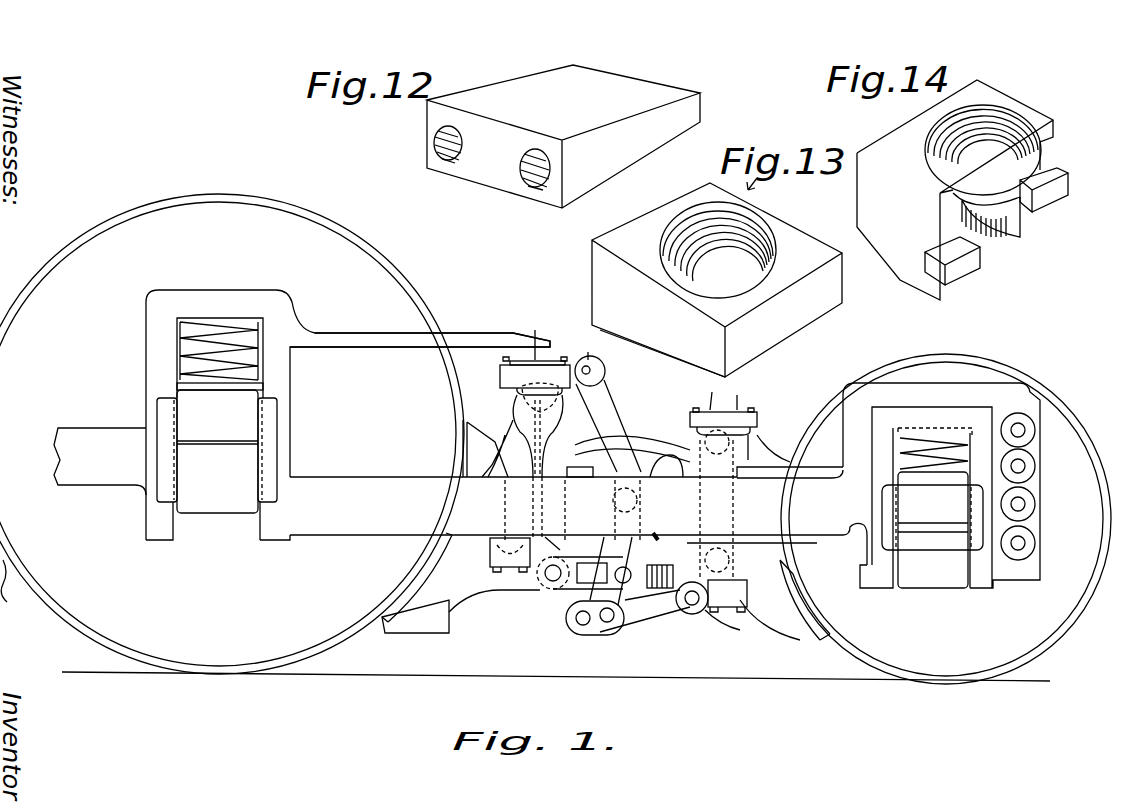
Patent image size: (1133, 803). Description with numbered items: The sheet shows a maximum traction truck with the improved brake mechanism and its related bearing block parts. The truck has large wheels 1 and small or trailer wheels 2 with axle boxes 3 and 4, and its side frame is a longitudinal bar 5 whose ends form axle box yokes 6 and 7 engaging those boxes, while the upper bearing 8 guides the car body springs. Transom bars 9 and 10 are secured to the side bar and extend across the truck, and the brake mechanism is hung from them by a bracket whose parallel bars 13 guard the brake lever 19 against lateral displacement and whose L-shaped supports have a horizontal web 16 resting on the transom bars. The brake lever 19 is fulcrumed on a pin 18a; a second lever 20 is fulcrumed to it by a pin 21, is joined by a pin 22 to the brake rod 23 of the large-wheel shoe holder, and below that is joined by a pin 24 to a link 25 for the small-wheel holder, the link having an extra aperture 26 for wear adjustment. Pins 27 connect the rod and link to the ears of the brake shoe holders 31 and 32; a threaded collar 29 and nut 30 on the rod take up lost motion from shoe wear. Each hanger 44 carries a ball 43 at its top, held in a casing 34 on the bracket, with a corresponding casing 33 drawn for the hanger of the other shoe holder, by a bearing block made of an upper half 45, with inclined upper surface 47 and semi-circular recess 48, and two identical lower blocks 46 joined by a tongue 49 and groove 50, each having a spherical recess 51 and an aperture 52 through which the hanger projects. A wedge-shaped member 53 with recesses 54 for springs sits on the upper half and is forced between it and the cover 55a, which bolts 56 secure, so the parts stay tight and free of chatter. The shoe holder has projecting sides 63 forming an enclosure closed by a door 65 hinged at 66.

In FIG. 1, the large wheels 1 is at (232, 434).
In FIG. 1, the small or trailer wheels 2 is at (946, 519).
In FIG. 1, the axle box 3 is at (165, 417).
In FIG. 1, the axle box 4 is at (932, 508).
In FIG. 1, the longitudinal bar 5 is at (578, 516).
In FIG. 1, the axle box yoke 6 is at (221, 299).
In FIG. 1, the axle box yoke 7 is at (942, 412).
In FIG. 1, the upper bearing 8 is at (365, 335).
In FIG. 1, the transom bar 9 is at (568, 505).
In FIG. 1, the transom bar 10 is at (722, 503).
In FIG. 1, the parallel bars 13 is at (632, 445).
In FIG. 1, the horizontal web 16 is at (564, 465).
In FIG. 1, the pin 18a is at (665, 464).
In FIG. 1, the brake lever 19 is at (604, 400).
In FIG. 1, the second lever 20 is at (624, 569).
In FIG. 1, the pin 21 is at (674, 560).
In FIG. 1, the pin 22 is at (570, 590).
In FIG. 1, the brake rod 23 is at (561, 547).
In FIG. 1, the pin 24 is at (608, 622).
In FIG. 1, the link 25 is at (648, 615).
In FIG. 1, the extra aperture 26 is at (570, 639).
In FIG. 1, the pins 27 is at (548, 578).
In FIG. 1, the collar 29 is at (596, 558).
In FIG. 1, the nut 30 is at (630, 582).
In FIG. 1, the brake shoe holder 31 is at (440, 615).
In FIG. 1, the brake shoe holder 32 is at (812, 636).
In FIG. 1, the hanger bracket 33 is at (500, 378).
In FIG. 1, the casing 34 is at (758, 420).
In FIG. 1, the ball 43 is at (546, 461).
In FIG. 1, the hanger 44 is at (626, 439).
In FIG. 13, the upper half of bearing block 45 is at (717, 280).
In FIG. 14, the lower half blocks 46 is at (955, 190).
In FIG. 13, the inclined upper surface 47 is at (652, 343).
In FIG. 13, the semi-circular recess 48 is at (718, 250).
In FIG. 14, the tongue 49 is at (1052, 178).
In FIG. 14, the groove 50 is at (950, 257).
In FIG. 14, the spherical recess 51 is at (983, 150).
In FIG. 14, the aperture 52 is at (1005, 240).
In FIG. 12, the wedge-shaped member 53 is at (563, 136).
In FIG. 12, the recesses 54 is at (462, 148).
In FIG. 1, the cover 55a is at (652, 356).
In FIG. 1, the bolts 56 is at (644, 371).
In FIG. 1, the projecting side 63 is at (727, 595).
In FIG. 1, the door 65 is at (493, 562).
In FIG. 1, the hinge 66 is at (490, 600).